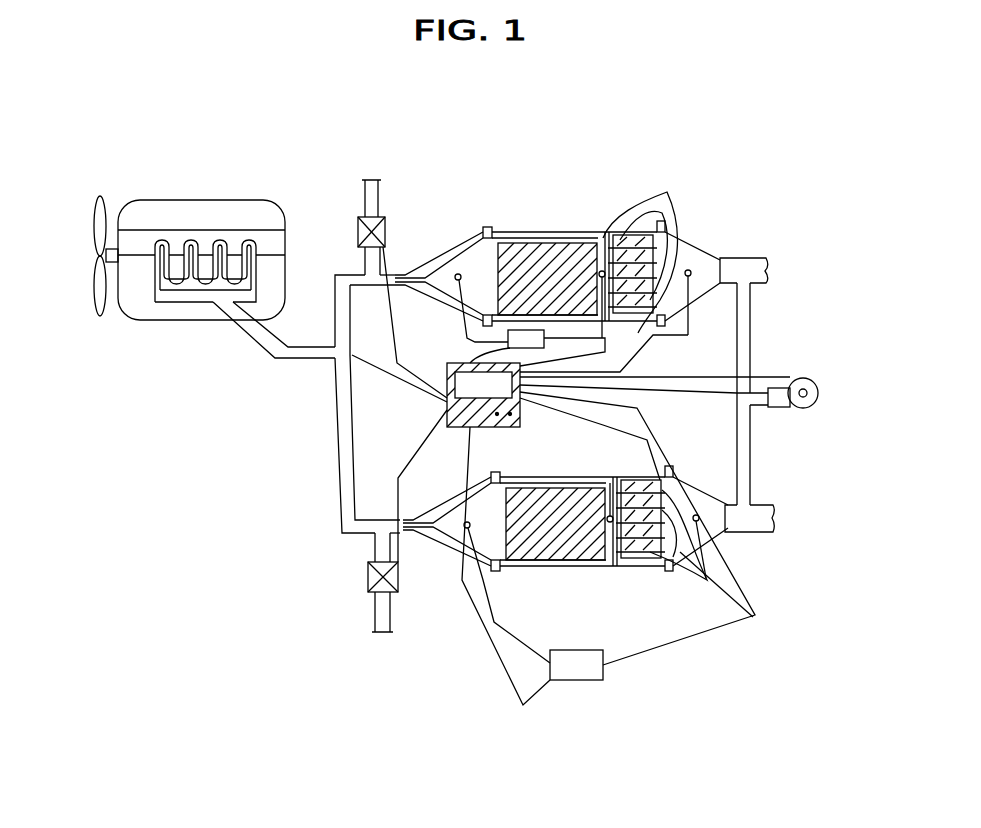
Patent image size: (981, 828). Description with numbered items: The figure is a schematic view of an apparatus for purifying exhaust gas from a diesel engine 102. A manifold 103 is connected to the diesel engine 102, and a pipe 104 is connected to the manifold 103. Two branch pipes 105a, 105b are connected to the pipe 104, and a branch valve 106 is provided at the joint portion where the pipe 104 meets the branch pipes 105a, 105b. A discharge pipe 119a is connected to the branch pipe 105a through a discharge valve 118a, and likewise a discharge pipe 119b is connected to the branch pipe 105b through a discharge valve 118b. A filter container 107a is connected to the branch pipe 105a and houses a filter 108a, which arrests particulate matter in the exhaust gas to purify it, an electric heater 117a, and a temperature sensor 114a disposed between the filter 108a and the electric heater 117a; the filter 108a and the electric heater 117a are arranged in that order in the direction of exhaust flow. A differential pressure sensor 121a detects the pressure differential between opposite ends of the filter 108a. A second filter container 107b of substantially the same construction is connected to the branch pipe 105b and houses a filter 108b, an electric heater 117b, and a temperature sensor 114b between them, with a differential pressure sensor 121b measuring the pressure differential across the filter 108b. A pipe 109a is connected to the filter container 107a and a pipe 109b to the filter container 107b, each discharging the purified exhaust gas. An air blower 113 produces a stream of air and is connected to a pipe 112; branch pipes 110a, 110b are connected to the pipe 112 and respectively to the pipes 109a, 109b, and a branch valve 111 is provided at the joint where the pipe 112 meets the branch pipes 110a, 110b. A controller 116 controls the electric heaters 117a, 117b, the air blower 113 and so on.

The diesel engine 102 is at (178, 213).
The manifold 103 is at (190, 302).
The pipe 104 is at (262, 355).
The branch pipe 105a is at (338, 290).
The branch pipe 105b is at (342, 525).
The branch valve 106 is at (338, 372).
The filter container 107a is at (510, 232).
The filter container 107b is at (553, 566).
The filter 108a is at (560, 250).
The filter 108b is at (553, 495).
The pipe 109a is at (744, 262).
The pipe 109b is at (725, 505).
The branch pipe 110a is at (750, 318).
The branch pipe 110b is at (750, 478).
The branch valve 111 is at (726, 379).
The pipe 112 is at (762, 407).
The air blower 113 is at (813, 384).
The temperature sensor 114a is at (615, 238).
The temperature sensor 114b is at (637, 560).
The controller 116 is at (462, 428).
The electric heater 117a is at (625, 266).
The electric heater 117b is at (636, 508).
The discharge valve 118a is at (386, 232).
The discharge valve 118b is at (398, 577).
The discharge pipe 119a is at (378, 195).
The discharge pipe 119b is at (375, 610).
The differential pressure sensor 121a is at (502, 320).
The differential pressure sensor 121b is at (585, 680).